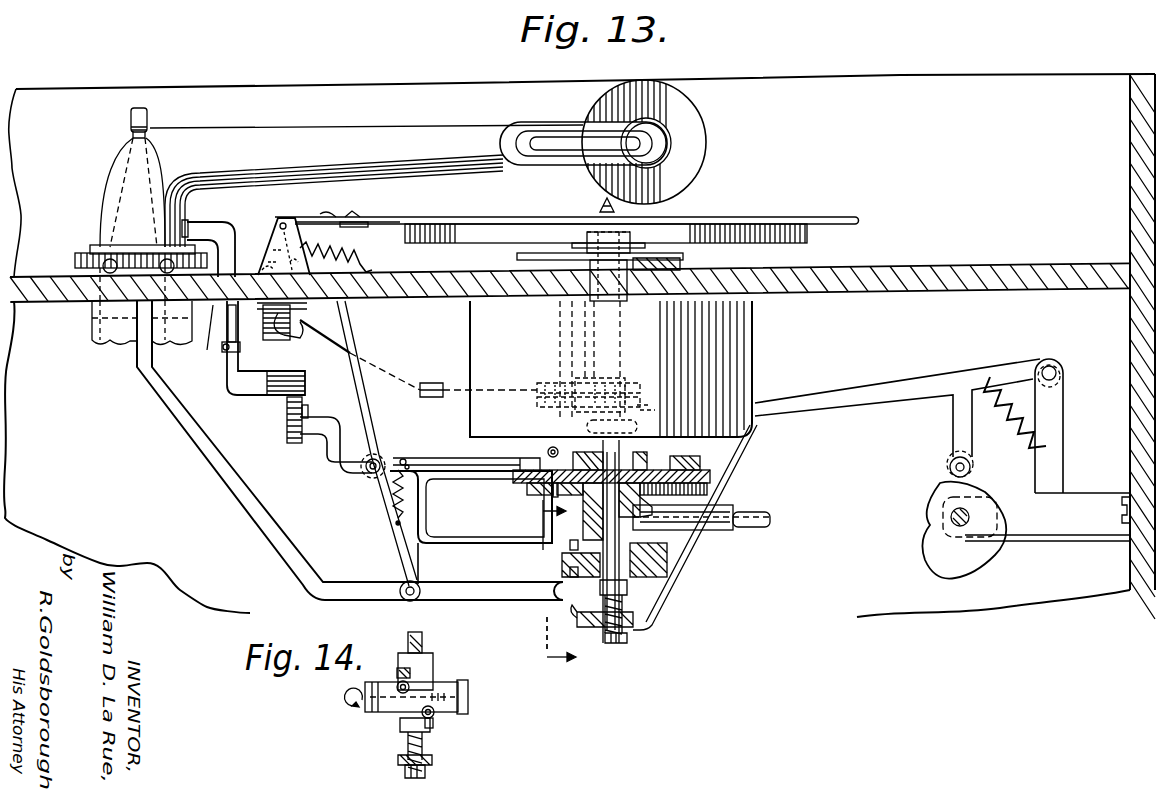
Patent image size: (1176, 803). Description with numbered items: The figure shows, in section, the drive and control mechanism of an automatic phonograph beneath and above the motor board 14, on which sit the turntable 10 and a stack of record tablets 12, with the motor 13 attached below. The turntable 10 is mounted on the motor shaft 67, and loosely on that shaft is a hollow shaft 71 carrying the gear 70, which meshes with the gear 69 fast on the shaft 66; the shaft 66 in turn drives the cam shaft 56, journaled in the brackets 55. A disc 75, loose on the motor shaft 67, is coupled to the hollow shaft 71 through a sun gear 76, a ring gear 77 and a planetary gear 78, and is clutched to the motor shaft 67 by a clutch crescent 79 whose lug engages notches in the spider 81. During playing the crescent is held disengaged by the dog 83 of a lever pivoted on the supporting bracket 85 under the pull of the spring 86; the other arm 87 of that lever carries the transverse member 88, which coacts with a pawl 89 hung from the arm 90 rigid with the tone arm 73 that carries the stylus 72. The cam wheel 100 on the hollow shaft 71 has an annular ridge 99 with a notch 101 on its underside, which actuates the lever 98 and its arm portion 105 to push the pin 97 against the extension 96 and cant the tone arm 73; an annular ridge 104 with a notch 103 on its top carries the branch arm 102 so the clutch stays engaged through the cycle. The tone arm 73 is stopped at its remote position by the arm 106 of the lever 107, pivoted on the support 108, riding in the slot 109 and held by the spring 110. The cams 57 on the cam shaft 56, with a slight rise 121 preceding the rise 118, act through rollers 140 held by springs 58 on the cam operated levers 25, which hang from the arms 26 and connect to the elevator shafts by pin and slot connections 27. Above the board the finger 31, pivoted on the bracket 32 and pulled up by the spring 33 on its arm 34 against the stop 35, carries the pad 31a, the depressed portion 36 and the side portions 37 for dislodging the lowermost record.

In FIG. 13, the turntable 10 is at (809, 229).
In FIG. 13, the record tablets 12 is at (826, 212).
In FIG. 13, the motor 13 is at (480, 339).
In FIG. 13, the motor board 14 is at (955, 266).
In FIG. 14, the motor board 14 is at (533, 642).
In FIG. 13, the cam operated levers 25 is at (858, 392).
In FIG. 13, the arms 26 is at (1064, 439).
In FIG. 13, the pin and slot connections 27 is at (622, 421).
In FIG. 13, the finger 31 is at (292, 220).
In FIG. 13, the pad 31a is at (337, 212).
In FIG. 13, the bracket 32 is at (272, 249).
In FIG. 13, the spring 33 is at (346, 257).
In FIG. 13, the arm 34 is at (279, 230).
In FIG. 13, the stop 35 is at (305, 262).
In FIG. 13, the depressed portion 36 is at (360, 228).
In FIG. 13, the side portions 37 is at (353, 213).
In FIG. 13, the brackets 55 is at (1102, 541).
In FIG. 13, the cam shaft 56 is at (970, 518).
In FIG. 13, the cams 57 is at (933, 508).
In FIG. 13, the springs 58 is at (1010, 437).
In FIG. 13, the shaft 66 is at (760, 528).
In FIG. 13, the motor shaft 67 is at (672, 457).
In FIG. 13, the gear 69 is at (652, 538).
In FIG. 13, the gear 70 is at (653, 505).
In FIG. 13, the hollow shaft 71 is at (603, 528).
In FIG. 14, the hollow shaft 71 is at (420, 660).
In FIG. 13, the stylus 72 is at (688, 188).
In FIG. 13, the tone arm 73 is at (405, 132).
In FIG. 13, the disc 75 is at (513, 477).
In FIG. 13, the sun gear 76 is at (588, 452).
In FIG. 13, the ring gear 77 is at (527, 490).
In FIG. 13, the planetary gear 78 is at (556, 498).
In FIG. 13, the clutch crescent 79 is at (700, 470).
In FIG. 13, the spider 81 is at (647, 460).
In FIG. 13, the dog 83 is at (440, 458).
In FIG. 13, the supporting bracket 85 is at (392, 421).
In FIG. 13, the spring 86 is at (366, 474).
In FIG. 13, the arm 87 is at (315, 440).
In FIG. 13, the member 88 is at (287, 417).
In FIG. 13, the pawl 89 is at (306, 373).
In FIG. 13, the arm 90 is at (230, 222).
In FIG. 13, the extension 96 is at (133, 253).
In FIG. 13, the pin 97 is at (140, 340).
In FIG. 13, the lever 98 is at (258, 532).
In FIG. 14, the lever 98 is at (433, 724).
In FIG. 14, the annular ridge 99 is at (385, 722).
In FIG. 13, the cam wheel 100 is at (667, 570).
In FIG. 14, the cam wheel 100 is at (470, 697).
In FIG. 14, the notch 101 is at (450, 708).
In FIG. 13, the branch arm 102 is at (471, 527).
In FIG. 14, the branch arm 102 is at (412, 670).
In FIG. 14, the notch 103 is at (400, 680).
In FIG. 14, the annular ridge 104 is at (470, 684).
In FIG. 13, the arm portion 105 is at (448, 601).
In FIG. 13, the arm 106 is at (257, 325).
In FIG. 13, the lever 107 is at (350, 358).
In FIG. 13, the support 108 is at (300, 311).
In FIG. 13, the slot 109 is at (200, 335).
In FIG. 13, the spring 110 is at (289, 337).
In FIG. 13, the rise 118 is at (928, 562).
In FIG. 13, the slight rise 121 is at (1000, 548).
In FIG. 13, the rollers 140 is at (948, 462).